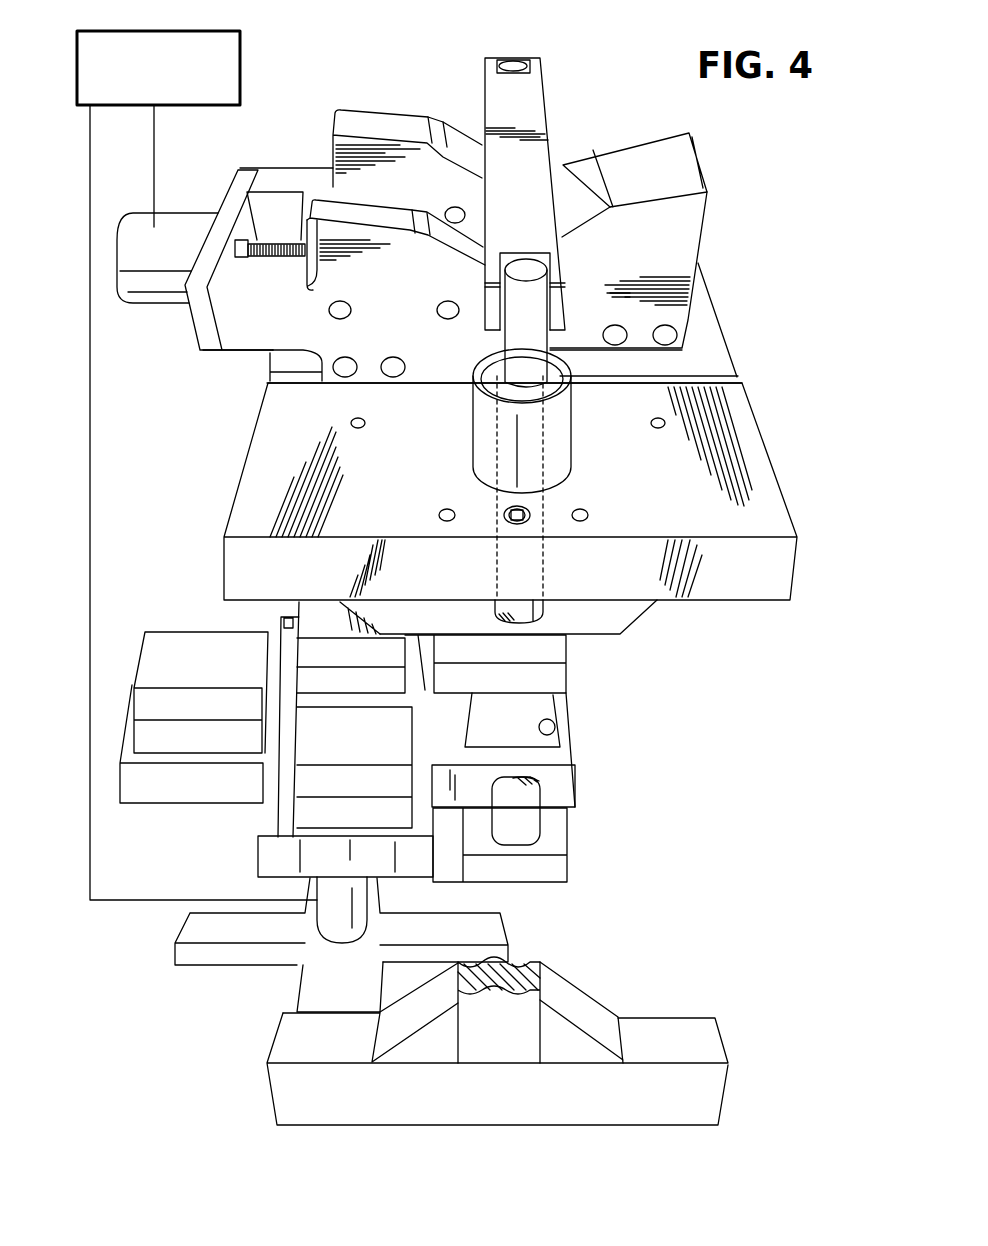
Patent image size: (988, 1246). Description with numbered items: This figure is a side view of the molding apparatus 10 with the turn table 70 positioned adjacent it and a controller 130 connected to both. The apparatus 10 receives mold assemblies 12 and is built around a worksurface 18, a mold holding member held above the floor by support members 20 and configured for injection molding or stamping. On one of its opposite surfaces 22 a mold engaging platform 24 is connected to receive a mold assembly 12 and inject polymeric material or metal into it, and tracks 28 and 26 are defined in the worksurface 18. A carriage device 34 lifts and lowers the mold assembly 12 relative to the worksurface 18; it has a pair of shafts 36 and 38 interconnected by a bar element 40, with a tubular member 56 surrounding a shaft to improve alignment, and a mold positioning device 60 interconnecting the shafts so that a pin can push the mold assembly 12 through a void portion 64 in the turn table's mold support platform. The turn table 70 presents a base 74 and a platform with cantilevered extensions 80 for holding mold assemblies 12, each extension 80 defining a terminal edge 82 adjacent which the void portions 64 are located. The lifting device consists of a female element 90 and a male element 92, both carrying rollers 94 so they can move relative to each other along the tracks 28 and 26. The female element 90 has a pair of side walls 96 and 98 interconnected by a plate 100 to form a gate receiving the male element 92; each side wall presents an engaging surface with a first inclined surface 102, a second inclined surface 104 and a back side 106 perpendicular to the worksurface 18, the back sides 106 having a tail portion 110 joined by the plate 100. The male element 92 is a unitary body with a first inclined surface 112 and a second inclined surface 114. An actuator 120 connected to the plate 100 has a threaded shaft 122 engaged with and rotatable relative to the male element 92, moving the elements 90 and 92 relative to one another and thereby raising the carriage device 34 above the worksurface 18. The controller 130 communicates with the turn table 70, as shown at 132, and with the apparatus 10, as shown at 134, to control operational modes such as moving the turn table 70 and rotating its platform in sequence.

The molding apparatus 10 is at (321, 96).
The mold assembly 12 is at (135, 645).
The worksurface 18 is at (742, 482).
The support members 20 is at (517, 1032).
The surface 22 is at (696, 600).
The mold engaging platform 24 is at (625, 614).
The track 26 is at (713, 313).
The track 28 is at (725, 381).
The carriage device 34 is at (523, 99).
The shaft 36 is at (516, 60).
The shaft 38 is at (520, 340).
The bar element 40 is at (530, 173).
The tubular member 56 is at (552, 443).
The mold positioning device 60 is at (550, 838).
The void portion 64 is at (547, 723).
The turn table 70 is at (168, 962).
The base 74 is at (325, 982).
The extensions 80 is at (165, 790).
The terminal edge 82 is at (577, 745).
The female element 90 is at (398, 122).
The male element 92 is at (707, 187).
The rollers 94 is at (344, 369).
The side wall 96 is at (330, 153).
The side wall 98 is at (333, 261).
The plate 100 is at (197, 322).
The first inclined surface 102 is at (457, 143).
The second inclined surface 104 is at (367, 118).
The back side 106 is at (323, 160).
The tail portion 110 is at (247, 340).
The first inclined surface 112 is at (630, 153).
The second inclined surface 114 is at (573, 197).
The actuator 120 is at (186, 220).
The threaded shaft 122 is at (272, 258).
The controller 130 is at (77, 85).
The communication with turn table 132 is at (88, 203).
The communication with apparatus 134 is at (152, 132).